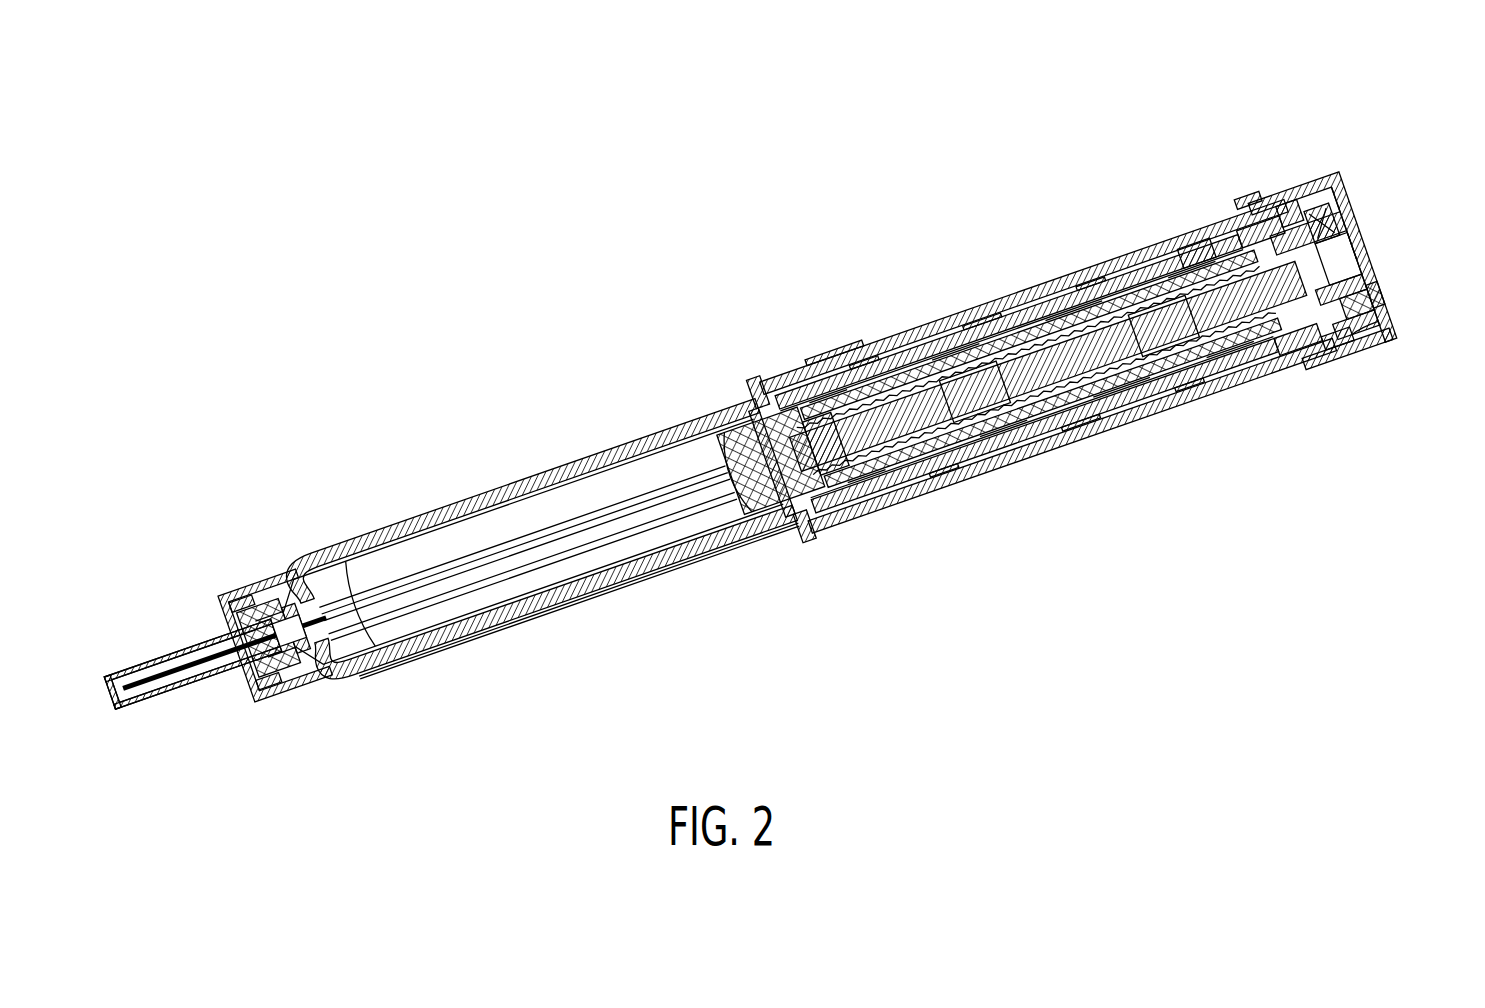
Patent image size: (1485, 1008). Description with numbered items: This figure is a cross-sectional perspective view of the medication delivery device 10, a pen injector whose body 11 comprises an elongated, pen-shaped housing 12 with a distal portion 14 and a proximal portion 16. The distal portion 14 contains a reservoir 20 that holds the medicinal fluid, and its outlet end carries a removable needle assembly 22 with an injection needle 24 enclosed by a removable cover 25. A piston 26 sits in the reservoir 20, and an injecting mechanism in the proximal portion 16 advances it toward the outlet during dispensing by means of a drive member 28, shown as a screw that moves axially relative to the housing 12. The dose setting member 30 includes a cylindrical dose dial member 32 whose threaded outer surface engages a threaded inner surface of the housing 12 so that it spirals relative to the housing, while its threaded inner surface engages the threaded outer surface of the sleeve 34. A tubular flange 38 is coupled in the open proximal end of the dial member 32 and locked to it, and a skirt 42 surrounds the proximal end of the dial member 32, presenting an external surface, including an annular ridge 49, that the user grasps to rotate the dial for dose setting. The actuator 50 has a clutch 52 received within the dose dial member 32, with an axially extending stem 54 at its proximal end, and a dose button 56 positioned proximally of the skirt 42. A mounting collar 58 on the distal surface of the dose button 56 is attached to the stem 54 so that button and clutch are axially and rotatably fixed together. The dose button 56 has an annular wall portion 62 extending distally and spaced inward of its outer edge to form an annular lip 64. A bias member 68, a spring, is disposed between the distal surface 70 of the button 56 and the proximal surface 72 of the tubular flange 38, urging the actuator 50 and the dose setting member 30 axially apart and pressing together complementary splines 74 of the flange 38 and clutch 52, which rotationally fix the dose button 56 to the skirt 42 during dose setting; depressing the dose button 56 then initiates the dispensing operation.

The medication delivery device 10 is at (785, 413).
The body 11 is at (1108, 314).
The housing 12 is at (878, 345).
The distal portion 14 is at (496, 465).
The proximal portion 16 is at (1144, 438).
The reservoir 20 is at (522, 598).
The needle assembly 22 is at (186, 612).
The injection needle 24 is at (160, 667).
The removable cover 25 is at (170, 702).
The piston 26 is at (790, 492).
The drive member 28 is at (930, 432).
The dose setting member 30 is at (1336, 293).
The dose dial member 32 is at (1250, 365).
The sleeve 34 is at (985, 457).
The tubular flange 38 is at (1296, 352).
The skirt 42 is at (1364, 358).
The annular ridge 49 is at (1244, 210).
The actuator 50 is at (1354, 156).
The clutch 52 is at (1186, 268).
The stem 54 is at (1350, 245).
The dose button 56 is at (1375, 290).
The mounting collar 58 is at (1326, 230).
The annular wall portion 62 is at (1392, 365).
The annular lip 64 is at (1370, 325).
The bias member 68 is at (1380, 310).
The distal surface 70 is at (1386, 300).
The proximal surface 72 is at (1285, 205).
The splines 74 is at (1196, 265).